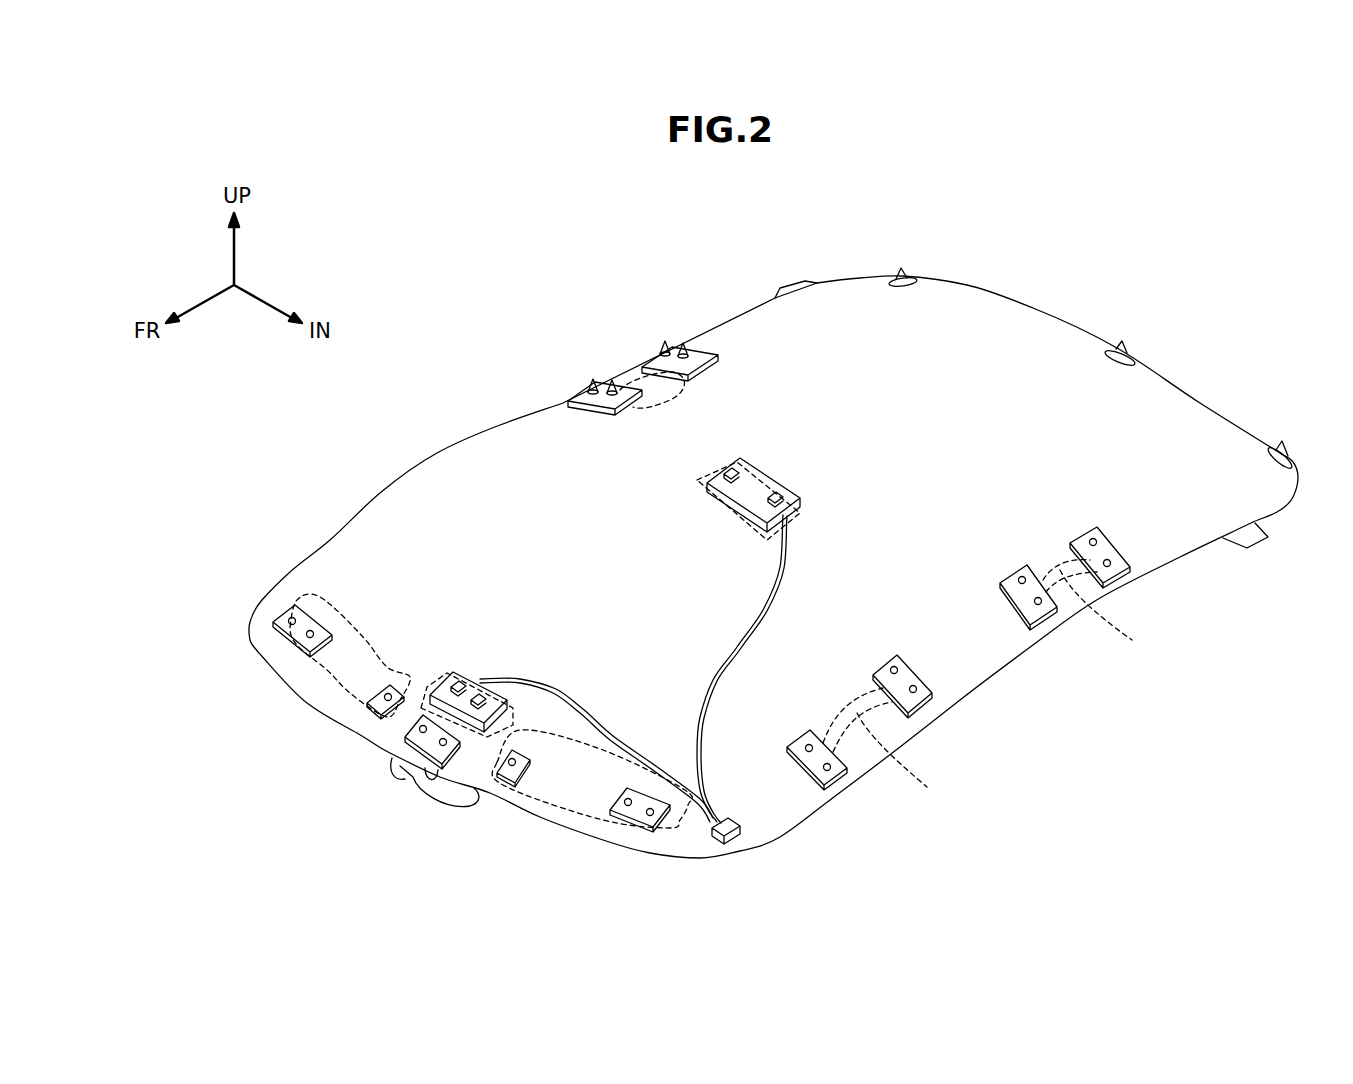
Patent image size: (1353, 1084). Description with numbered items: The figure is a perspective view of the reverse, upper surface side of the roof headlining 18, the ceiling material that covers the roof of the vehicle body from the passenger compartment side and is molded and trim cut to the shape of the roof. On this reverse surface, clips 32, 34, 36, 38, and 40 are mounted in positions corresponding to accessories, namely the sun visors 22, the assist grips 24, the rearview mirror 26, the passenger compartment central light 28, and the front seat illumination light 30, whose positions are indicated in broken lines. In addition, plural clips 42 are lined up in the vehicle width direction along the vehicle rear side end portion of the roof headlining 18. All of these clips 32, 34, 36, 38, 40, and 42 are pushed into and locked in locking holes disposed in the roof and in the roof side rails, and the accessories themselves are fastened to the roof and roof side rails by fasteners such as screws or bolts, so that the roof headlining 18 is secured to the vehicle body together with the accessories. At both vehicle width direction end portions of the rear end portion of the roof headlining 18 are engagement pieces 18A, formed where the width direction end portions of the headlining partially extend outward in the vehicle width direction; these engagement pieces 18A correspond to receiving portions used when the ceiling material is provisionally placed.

The roof headlining 18 is at (431, 446).
The engagement pieces 18A is at (789, 285).
The sun visors 22 is at (577, 744).
The assist grips 24 is at (630, 372).
The rearview mirror 26 is at (430, 798).
The passenger compartment central light 28 is at (712, 508).
The front seat illumination light 30 is at (427, 668).
The clips 32 is at (274, 632).
The clips 34 is at (668, 343).
The clips 36 is at (397, 765).
The clips 38 is at (765, 474).
The clips 40 is at (470, 680).
The clips 42 is at (905, 270).